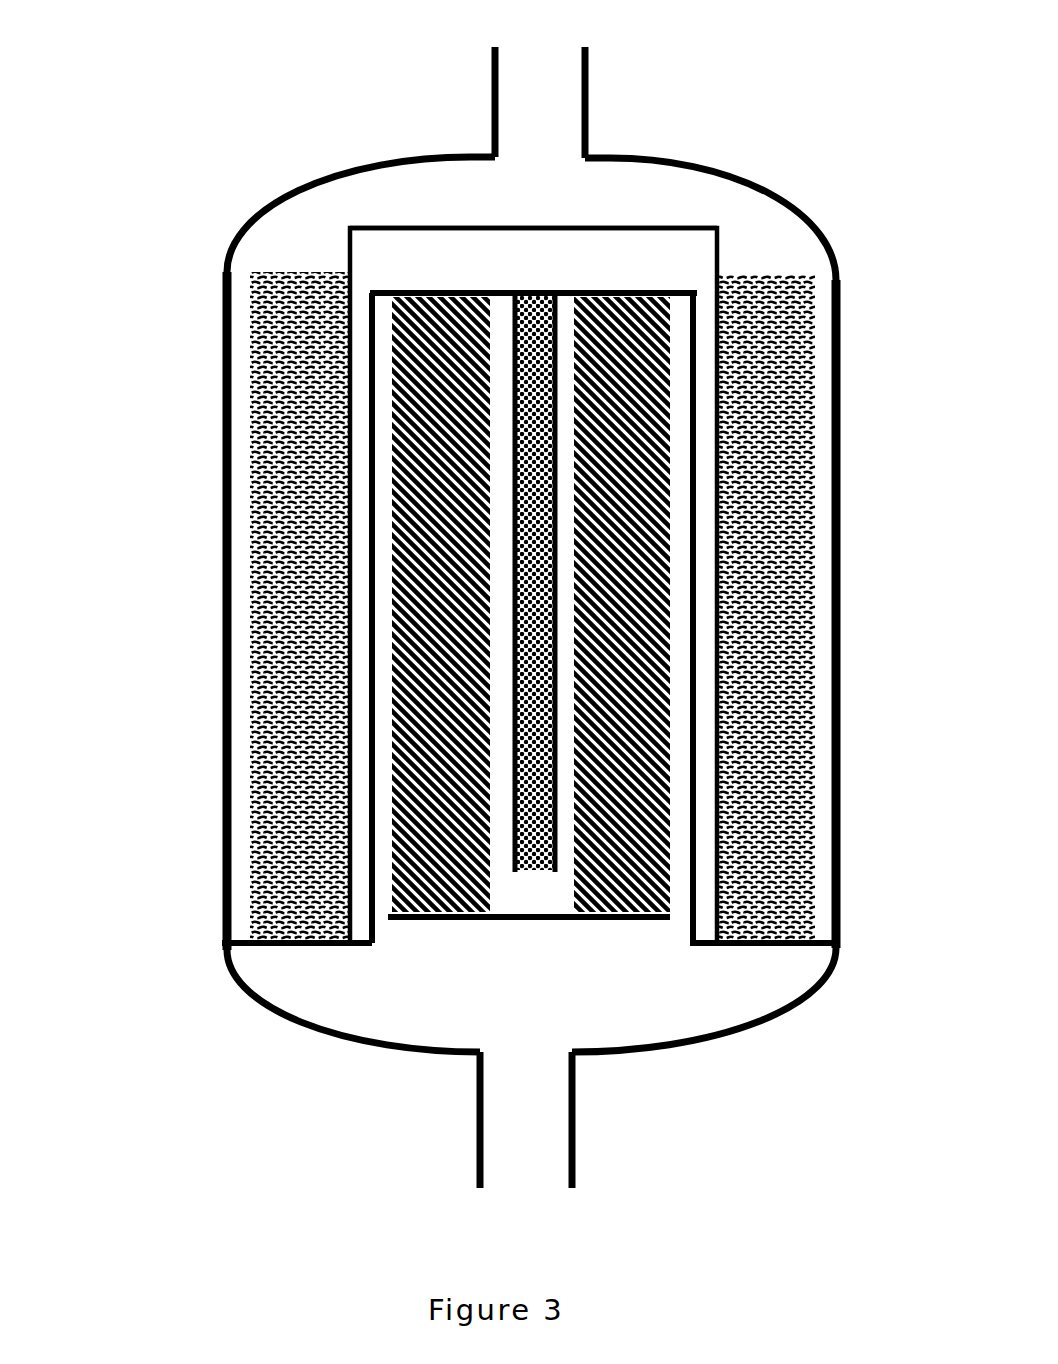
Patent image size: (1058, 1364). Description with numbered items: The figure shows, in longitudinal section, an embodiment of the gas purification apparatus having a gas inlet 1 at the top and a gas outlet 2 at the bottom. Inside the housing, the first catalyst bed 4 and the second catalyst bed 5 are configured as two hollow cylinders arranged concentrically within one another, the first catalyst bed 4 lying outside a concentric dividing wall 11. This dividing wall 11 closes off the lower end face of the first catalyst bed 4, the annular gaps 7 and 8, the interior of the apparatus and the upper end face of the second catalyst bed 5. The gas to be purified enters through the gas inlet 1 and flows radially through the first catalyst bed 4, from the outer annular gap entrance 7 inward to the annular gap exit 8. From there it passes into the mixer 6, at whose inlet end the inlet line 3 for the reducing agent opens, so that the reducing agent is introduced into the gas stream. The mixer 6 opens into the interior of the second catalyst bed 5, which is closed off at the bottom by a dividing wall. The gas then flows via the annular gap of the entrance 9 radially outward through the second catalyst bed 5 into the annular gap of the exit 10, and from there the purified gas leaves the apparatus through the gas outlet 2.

The gas inlet 1 is at (540, 79).
The gas outlet 2 is at (526, 1156).
The inlet line 3 is at (537, 293).
The first catalyst bed 4 is at (532, 607).
The second catalyst bed 5 is at (531, 604).
The mixer 6 is at (563, 292).
The outer annular gap entrance 7 is at (824, 352).
The annular gap exit 8 is at (705, 493).
The annular gap of the entrance to the second catalyst bed 9 is at (563, 655).
The annular gap of the exit from the second catalyst bed 10 is at (677, 790).
The concentric dividing wall 11 is at (372, 925).